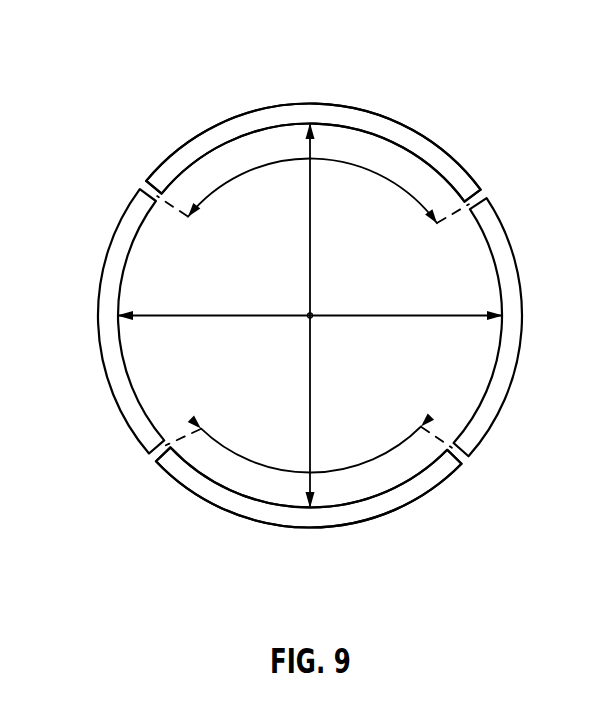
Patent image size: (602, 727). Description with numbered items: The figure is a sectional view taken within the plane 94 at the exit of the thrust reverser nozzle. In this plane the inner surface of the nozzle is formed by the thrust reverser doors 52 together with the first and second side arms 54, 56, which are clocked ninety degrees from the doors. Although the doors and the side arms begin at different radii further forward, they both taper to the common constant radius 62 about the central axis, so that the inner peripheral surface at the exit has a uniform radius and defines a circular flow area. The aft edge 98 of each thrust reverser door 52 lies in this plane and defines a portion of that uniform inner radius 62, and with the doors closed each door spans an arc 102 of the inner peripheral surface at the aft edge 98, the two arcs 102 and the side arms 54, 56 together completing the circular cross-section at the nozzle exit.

The plane 94 is at (282, 66).
The aft edge 98 is at (348, 122).
The thrust reverser doors 52 is at (433, 134).
The first side arm 54 is at (108, 350).
The second side arm 56 is at (510, 289).
The constant radius 62 is at (312, 265).
The arc 102 is at (226, 183).